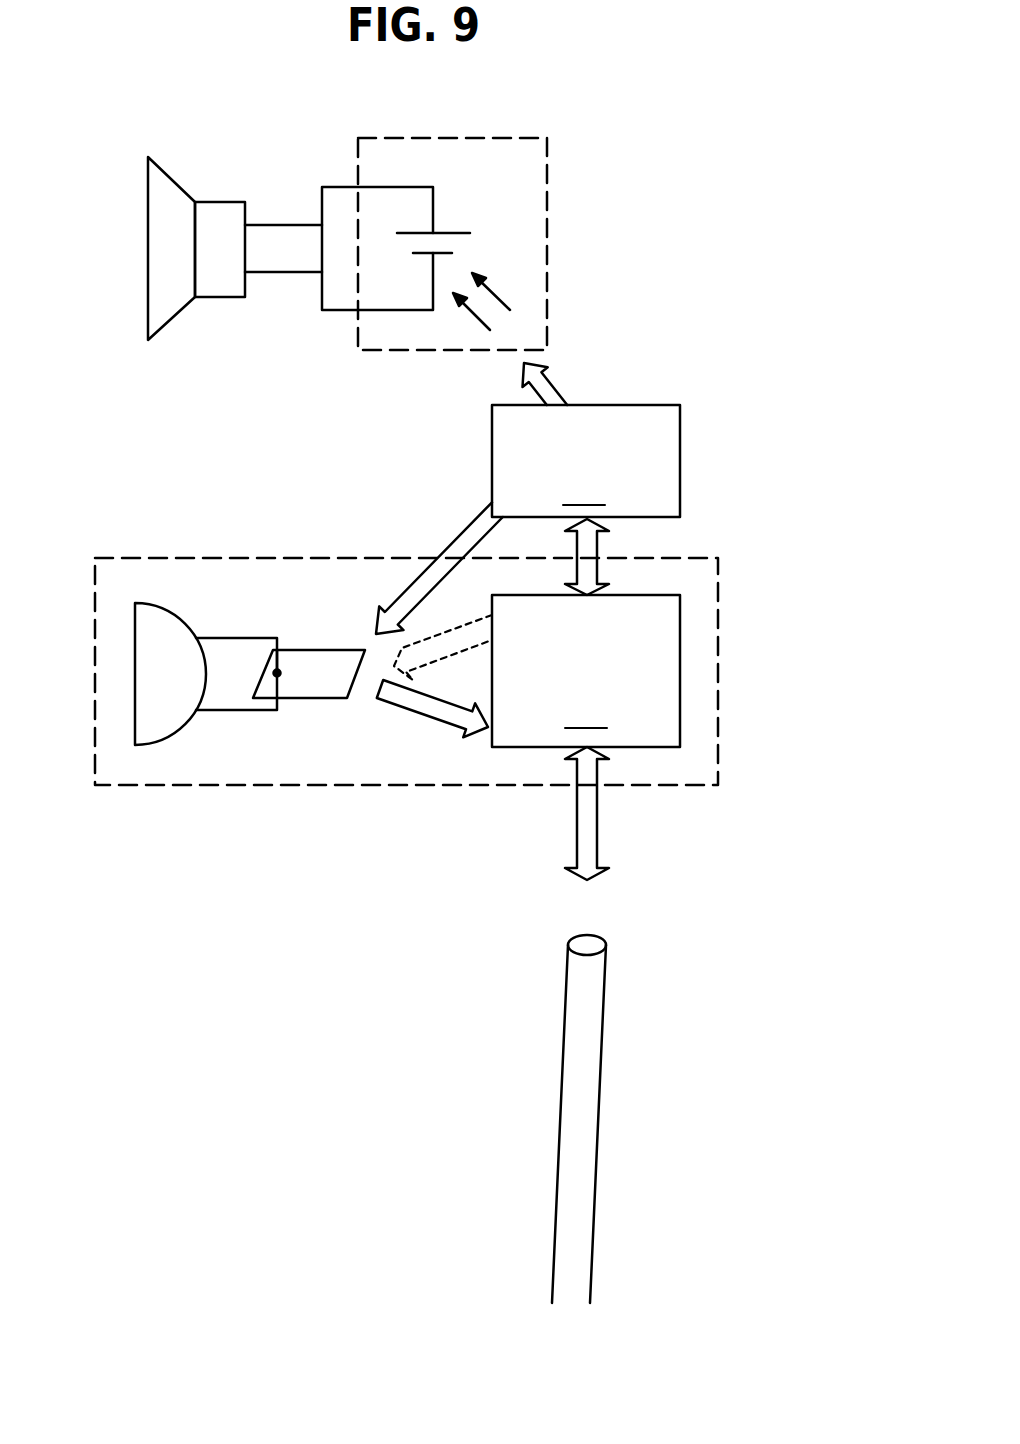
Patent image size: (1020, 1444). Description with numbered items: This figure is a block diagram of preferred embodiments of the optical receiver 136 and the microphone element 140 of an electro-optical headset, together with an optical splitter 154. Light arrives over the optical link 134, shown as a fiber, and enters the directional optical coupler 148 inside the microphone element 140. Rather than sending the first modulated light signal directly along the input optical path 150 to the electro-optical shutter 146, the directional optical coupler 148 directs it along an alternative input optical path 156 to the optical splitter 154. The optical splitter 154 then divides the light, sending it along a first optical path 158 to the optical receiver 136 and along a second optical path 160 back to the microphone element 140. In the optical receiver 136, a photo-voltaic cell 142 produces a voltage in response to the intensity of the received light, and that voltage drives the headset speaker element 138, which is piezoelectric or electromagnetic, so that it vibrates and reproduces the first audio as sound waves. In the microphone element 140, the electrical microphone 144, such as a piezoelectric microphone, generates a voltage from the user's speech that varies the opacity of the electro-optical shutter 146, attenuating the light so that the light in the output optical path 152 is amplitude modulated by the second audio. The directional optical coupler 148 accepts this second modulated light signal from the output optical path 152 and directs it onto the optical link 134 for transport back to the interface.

The optical link 134 is at (562, 1172).
The optical receiver 136 is at (547, 138).
The headset speaker element 138 is at (170, 176).
The microphone element 140 is at (208, 558).
The photo-voltaic cell 142 is at (462, 233).
The electrical microphone 144 is at (170, 612).
The electro-optical shutter 146 is at (331, 686).
The directional optical coupler 148 is at (586, 671).
The input optical path 150 is at (462, 623).
The output optical path 152 is at (420, 714).
The optical splitter 154 is at (586, 461).
The alternative input optical path 156 is at (598, 537).
The first optical path 158 is at (558, 385).
The second optical path 160 is at (417, 577).